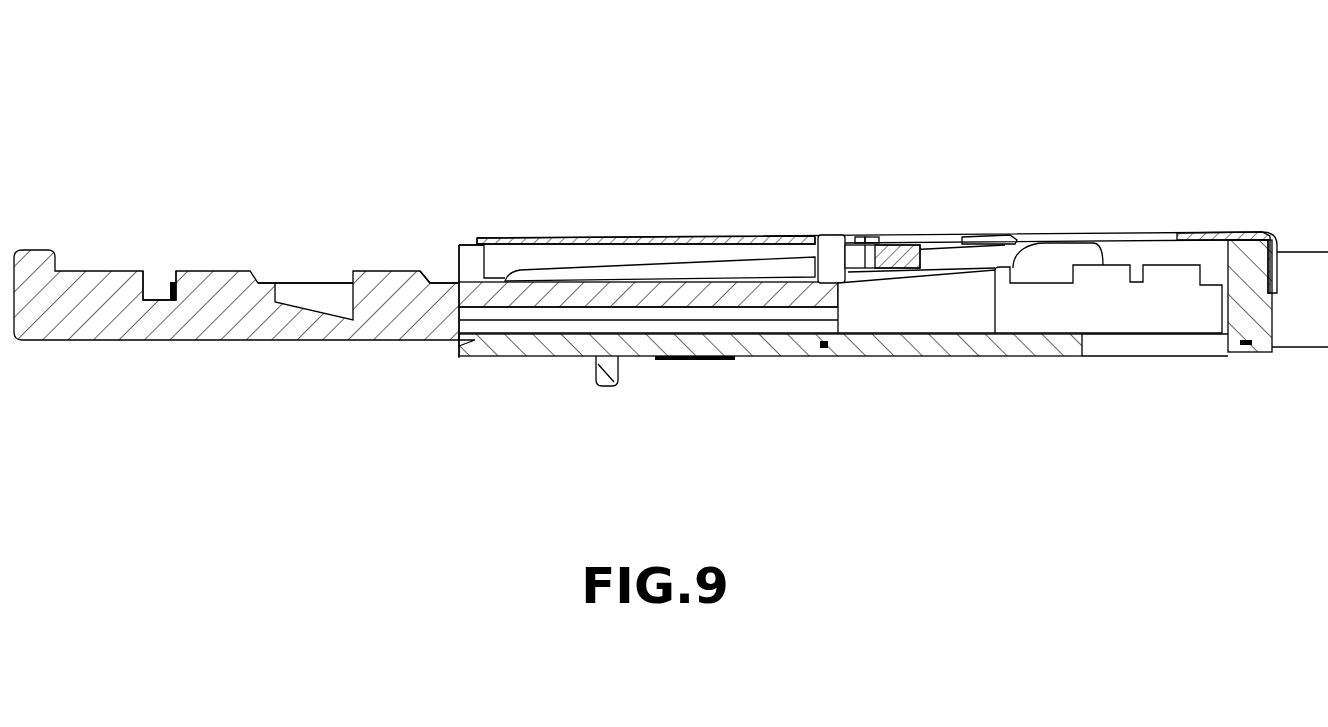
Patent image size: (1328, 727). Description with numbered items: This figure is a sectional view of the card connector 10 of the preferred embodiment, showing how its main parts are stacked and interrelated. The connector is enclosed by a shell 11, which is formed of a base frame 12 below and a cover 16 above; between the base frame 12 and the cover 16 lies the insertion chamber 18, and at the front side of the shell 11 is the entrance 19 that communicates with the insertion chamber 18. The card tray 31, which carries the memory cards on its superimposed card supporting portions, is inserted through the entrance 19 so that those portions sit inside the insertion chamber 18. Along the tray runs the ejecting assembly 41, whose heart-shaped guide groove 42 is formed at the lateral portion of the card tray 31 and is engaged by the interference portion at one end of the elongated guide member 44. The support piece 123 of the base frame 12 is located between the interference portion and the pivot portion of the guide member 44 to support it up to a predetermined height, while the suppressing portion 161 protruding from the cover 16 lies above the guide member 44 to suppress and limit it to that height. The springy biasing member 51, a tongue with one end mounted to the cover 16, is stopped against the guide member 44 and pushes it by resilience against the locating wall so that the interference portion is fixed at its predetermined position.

The card connector 10 is at (588, 164).
The shell 11 is at (757, 231).
The base frame 12 is at (1000, 357).
The cover 16 is at (718, 236).
The suppressing portion 161 is at (985, 238).
The insertion chamber 18 is at (913, 313).
The entrance 19 is at (443, 256).
The card tray 31 is at (224, 266).
The ejecting assembly 41 is at (928, 239).
The heart-shaped guide groove 42 is at (163, 271).
The guide member 44 is at (803, 242).
The springy biasing member 51 is at (840, 236).
The support piece 123 is at (1047, 243).